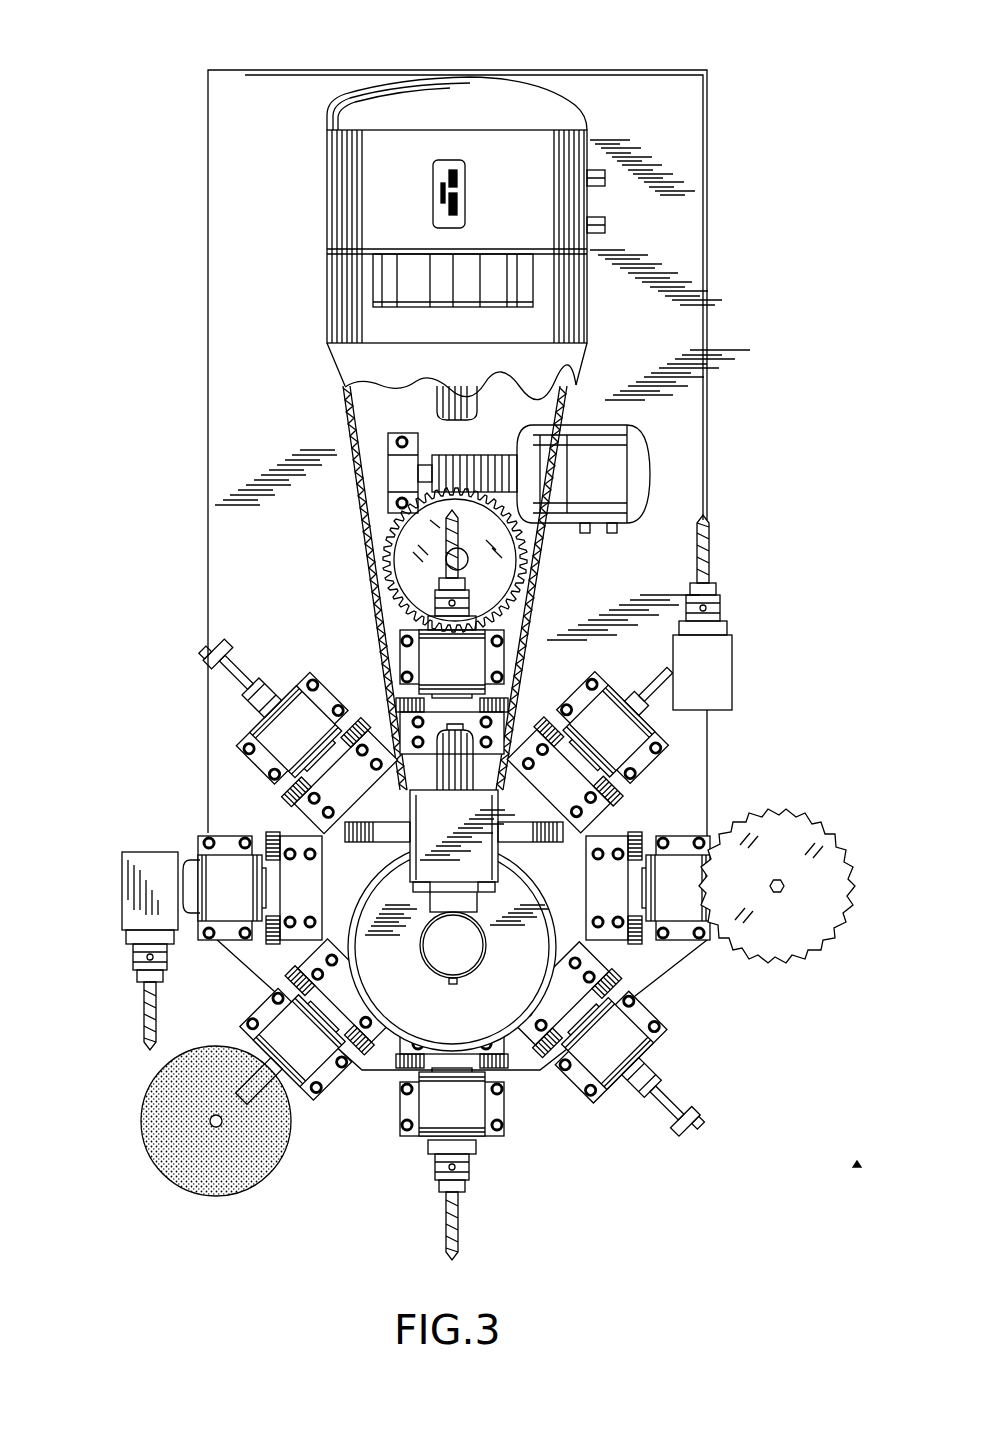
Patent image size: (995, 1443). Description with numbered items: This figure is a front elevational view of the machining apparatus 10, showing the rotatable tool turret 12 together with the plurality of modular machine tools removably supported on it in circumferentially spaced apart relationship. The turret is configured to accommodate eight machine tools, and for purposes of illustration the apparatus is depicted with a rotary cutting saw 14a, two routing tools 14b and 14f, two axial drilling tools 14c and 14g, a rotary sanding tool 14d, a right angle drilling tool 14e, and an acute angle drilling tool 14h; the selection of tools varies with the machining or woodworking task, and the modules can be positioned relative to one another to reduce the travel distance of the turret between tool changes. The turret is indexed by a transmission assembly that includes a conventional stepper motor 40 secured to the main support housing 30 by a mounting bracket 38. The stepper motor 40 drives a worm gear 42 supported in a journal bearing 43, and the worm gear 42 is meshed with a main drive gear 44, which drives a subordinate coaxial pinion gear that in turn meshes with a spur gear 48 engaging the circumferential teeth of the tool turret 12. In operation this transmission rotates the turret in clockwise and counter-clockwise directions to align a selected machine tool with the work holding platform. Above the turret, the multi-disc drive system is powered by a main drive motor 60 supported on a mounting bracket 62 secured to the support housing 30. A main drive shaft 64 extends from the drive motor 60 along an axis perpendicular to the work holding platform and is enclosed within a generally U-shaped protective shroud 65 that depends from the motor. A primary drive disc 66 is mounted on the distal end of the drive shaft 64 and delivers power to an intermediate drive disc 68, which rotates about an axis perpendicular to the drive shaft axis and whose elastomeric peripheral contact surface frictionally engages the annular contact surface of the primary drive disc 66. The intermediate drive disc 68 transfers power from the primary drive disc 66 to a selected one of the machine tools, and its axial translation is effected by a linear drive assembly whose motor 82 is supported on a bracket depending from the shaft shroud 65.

The machining apparatus 10 is at (148, 147).
The tool turret 12 is at (625, 815).
The rotary cutting saw 14a is at (790, 810).
The routing tool 14b is at (700, 1115).
The axial drilling tool 14c is at (460, 1235).
The rotary sanding tool 14d is at (168, 1165).
The right angle drilling tool 14e is at (143, 998).
The routing tool 14f is at (217, 662).
The axial drilling tool 14g is at (440, 530).
The acute angle drilling tool 14h is at (710, 547).
The main support housing 30 is at (707, 128).
The mounting bracket 38 is at (605, 420).
The stepper motor 40 is at (642, 465).
The worm gear 42 is at (490, 450).
The journal bearing 43 is at (390, 470).
The main drive gear 44 is at (510, 557).
The spur gear 48 is at (425, 640).
The main drive motor 60 is at (485, 95).
The mounting bracket 62 is at (540, 225).
The main drive shaft 64 is at (440, 403).
The protective shroud 65 is at (345, 378).
The primary drive disc 66 is at (330, 832).
The intermediate drive disc 68 is at (410, 1012).
The motor 82 is at (457, 955).